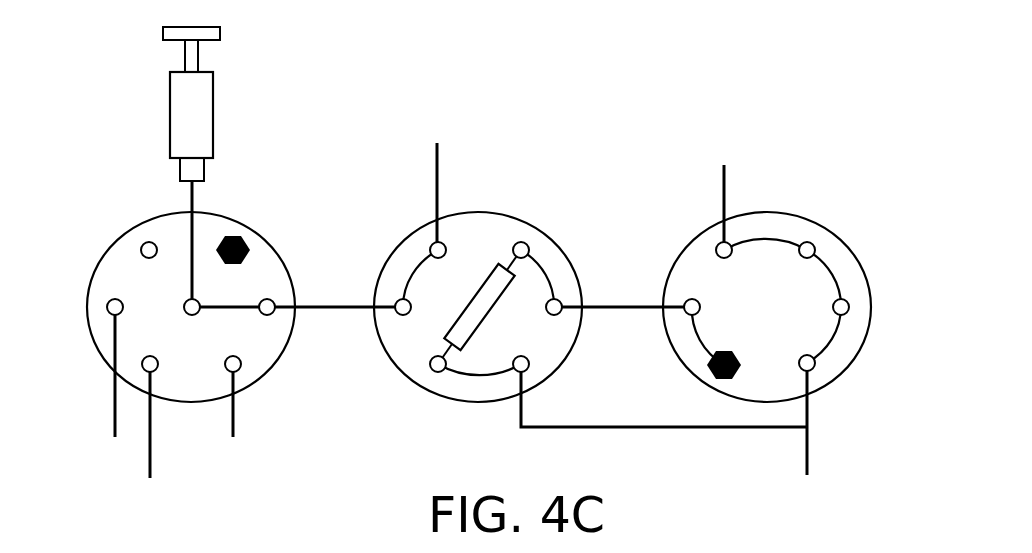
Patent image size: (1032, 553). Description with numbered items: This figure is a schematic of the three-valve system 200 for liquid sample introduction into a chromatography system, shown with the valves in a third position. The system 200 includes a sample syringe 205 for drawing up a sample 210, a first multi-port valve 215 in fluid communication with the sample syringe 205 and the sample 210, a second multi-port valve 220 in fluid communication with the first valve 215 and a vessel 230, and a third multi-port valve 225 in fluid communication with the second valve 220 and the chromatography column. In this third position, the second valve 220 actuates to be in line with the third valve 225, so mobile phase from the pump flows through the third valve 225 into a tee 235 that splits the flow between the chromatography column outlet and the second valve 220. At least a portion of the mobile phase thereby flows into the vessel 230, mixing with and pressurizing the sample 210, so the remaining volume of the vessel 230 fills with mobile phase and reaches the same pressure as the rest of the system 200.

The system 200 is at (690, 55).
The sample syringe 205 is at (112, 103).
The sample 210 is at (258, 507).
The first multi-port valve 215 is at (100, 228).
The second multi-port valve 220 is at (615, 228).
The third multi-port valve 225 is at (903, 228).
The vessel 230 is at (470, 317).
The tee 235 is at (809, 427).